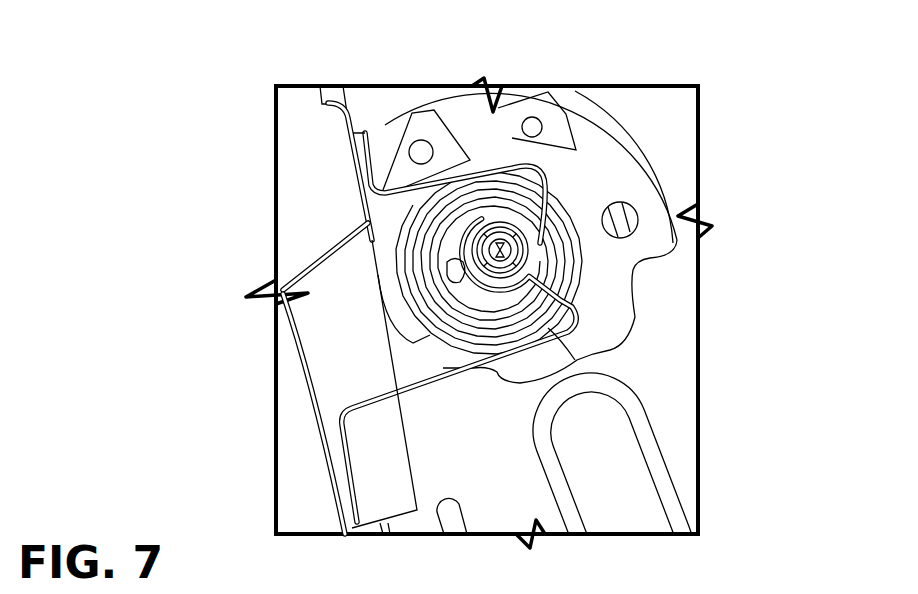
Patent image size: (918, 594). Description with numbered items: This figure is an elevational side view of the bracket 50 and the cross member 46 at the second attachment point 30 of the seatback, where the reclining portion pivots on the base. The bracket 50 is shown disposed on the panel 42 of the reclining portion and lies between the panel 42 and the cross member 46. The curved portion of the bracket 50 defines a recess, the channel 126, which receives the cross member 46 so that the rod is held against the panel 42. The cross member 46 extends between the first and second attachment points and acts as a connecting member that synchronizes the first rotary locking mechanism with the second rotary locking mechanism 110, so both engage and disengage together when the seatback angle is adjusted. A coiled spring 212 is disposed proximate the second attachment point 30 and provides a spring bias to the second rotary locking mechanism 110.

The second attachment point 30 is at (512, 218).
The coiled spring 212 is at (558, 192).
The panel 42 is at (338, 243).
The second rotary locking mechanism 110 is at (535, 238).
The cross member 46 is at (518, 250).
The bracket 50 is at (548, 328).
The channel 126 is at (468, 288).